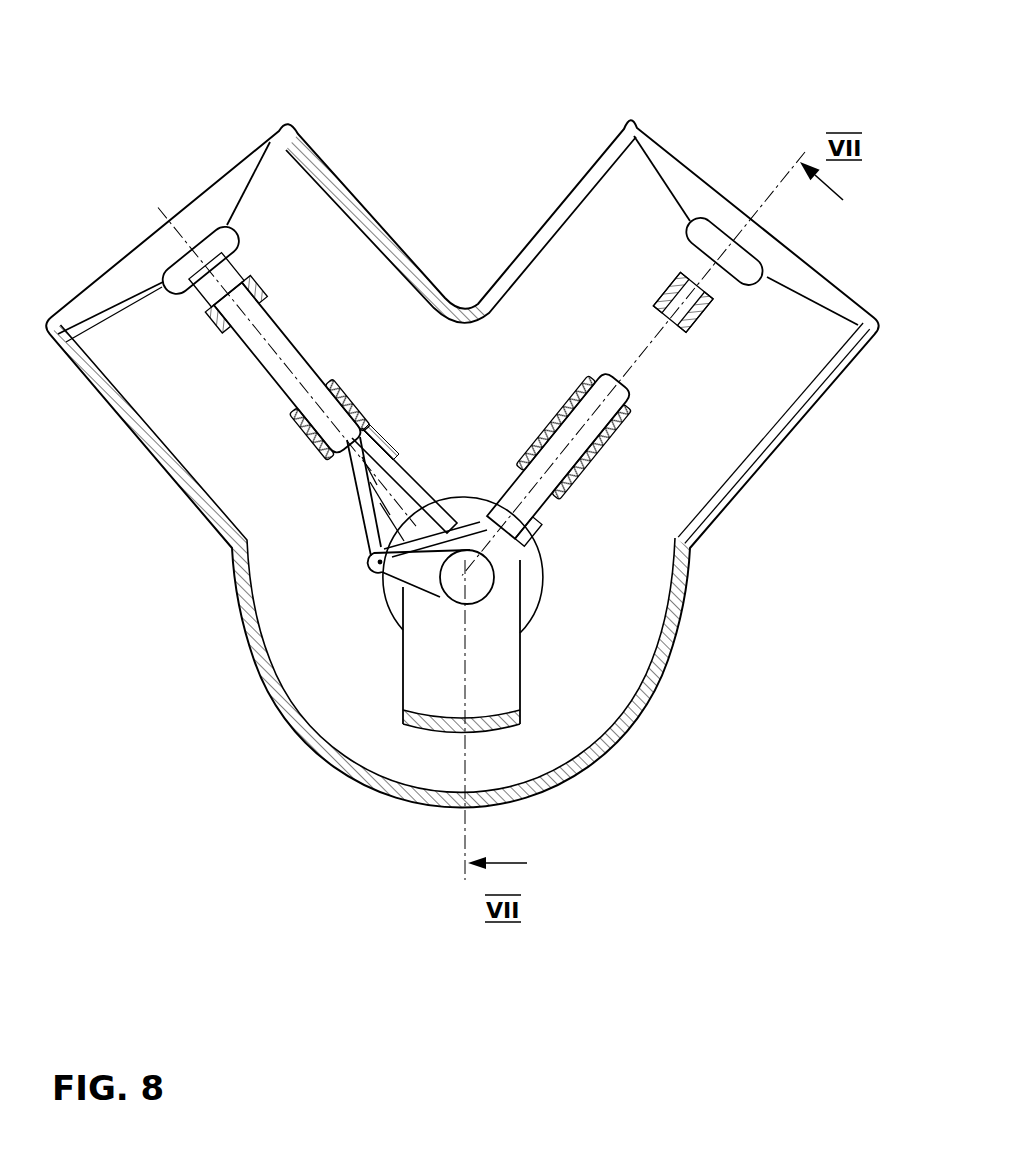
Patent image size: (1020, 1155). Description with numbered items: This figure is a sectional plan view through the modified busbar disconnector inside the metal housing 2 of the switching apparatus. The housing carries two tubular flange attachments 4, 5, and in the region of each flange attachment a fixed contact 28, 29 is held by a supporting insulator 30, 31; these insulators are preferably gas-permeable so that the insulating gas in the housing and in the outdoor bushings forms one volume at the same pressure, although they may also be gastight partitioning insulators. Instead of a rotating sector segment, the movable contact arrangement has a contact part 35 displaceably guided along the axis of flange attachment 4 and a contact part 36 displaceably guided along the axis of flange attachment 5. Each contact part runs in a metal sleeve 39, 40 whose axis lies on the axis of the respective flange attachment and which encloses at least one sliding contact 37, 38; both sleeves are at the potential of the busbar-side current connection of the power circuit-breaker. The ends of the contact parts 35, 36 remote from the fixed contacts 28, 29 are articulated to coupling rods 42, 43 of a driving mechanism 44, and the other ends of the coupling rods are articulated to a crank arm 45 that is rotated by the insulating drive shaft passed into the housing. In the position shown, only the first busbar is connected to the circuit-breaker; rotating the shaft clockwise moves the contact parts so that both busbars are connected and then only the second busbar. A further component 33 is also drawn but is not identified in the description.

The metal housing 2 is at (587, 692).
The tubular flange attachment 4 is at (345, 190).
The tubular flange attachment 5 is at (785, 420).
The fixed contact 28 is at (203, 283).
The fixed contact 29 is at (697, 300).
The supporting insulator 30 is at (262, 183).
The supporting insulator 31 is at (653, 164).
The cylinder 33 is at (440, 668).
The contact part 35 is at (267, 360).
The contact part 36 is at (617, 393).
The sliding contact 37 is at (297, 432).
The sliding contact 38 is at (620, 432).
The metal sleeve 39 is at (340, 482).
The metal sleeve 40 is at (580, 483).
The coupling rod 42 is at (367, 513).
The coupling rod 43 is at (535, 548).
The driving mechanism 44 is at (94, 676).
The crank arm 45 is at (475, 578).